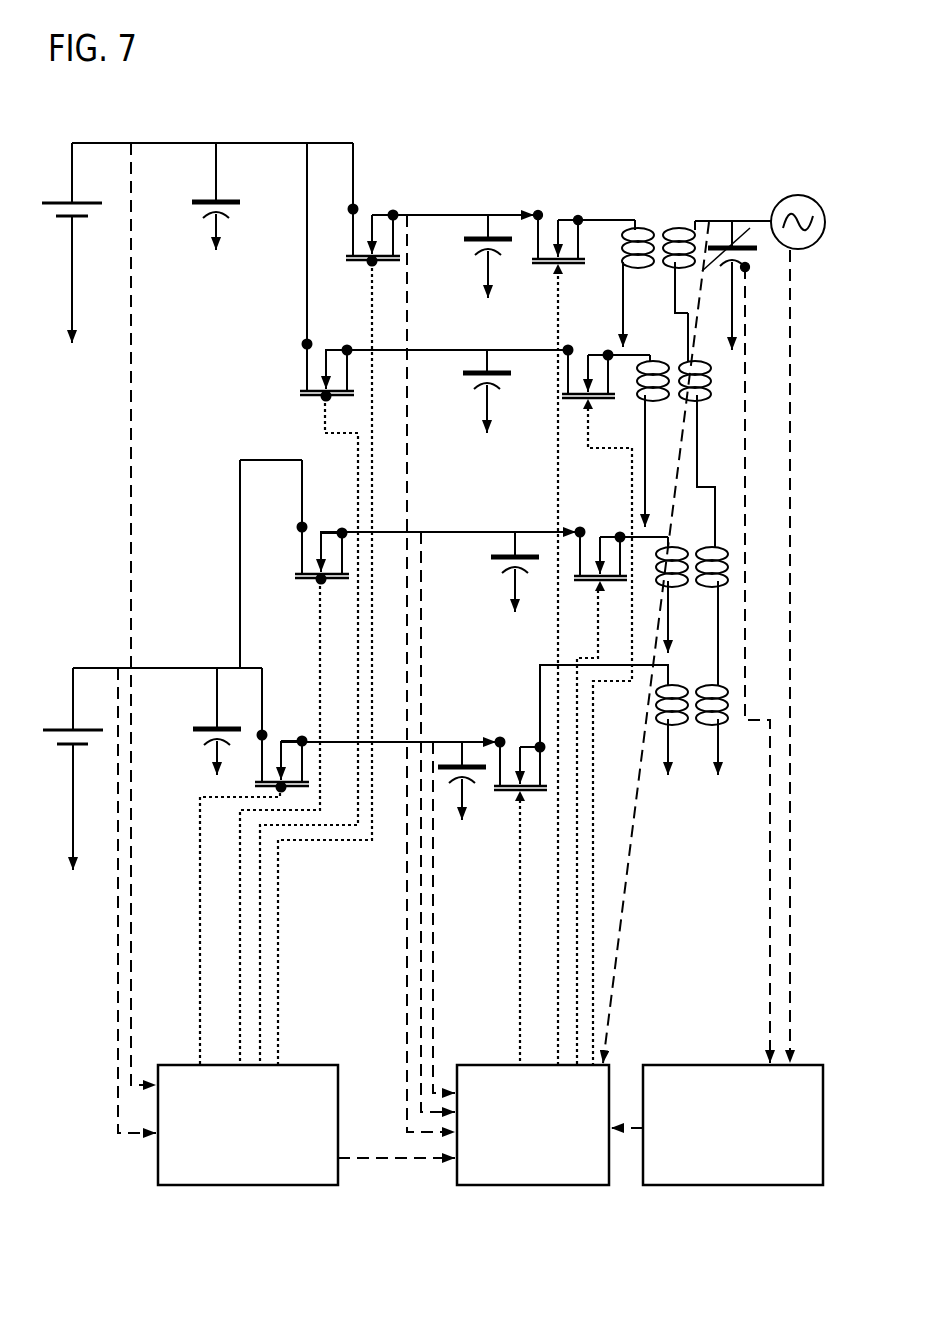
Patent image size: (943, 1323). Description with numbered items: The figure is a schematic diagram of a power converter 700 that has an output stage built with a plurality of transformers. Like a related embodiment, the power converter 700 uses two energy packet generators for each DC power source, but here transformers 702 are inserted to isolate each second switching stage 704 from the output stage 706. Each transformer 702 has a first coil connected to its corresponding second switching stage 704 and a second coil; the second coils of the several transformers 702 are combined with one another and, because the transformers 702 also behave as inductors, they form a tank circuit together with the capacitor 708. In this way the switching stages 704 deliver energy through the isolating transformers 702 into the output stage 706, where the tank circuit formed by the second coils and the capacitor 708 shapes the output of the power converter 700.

The power converter 700 is at (590, 65).
The transformer 702 is at (653, 206).
The second switching stage 704 is at (567, 197).
The output stage 706 is at (731, 197).
The capacitor 708 is at (746, 268).